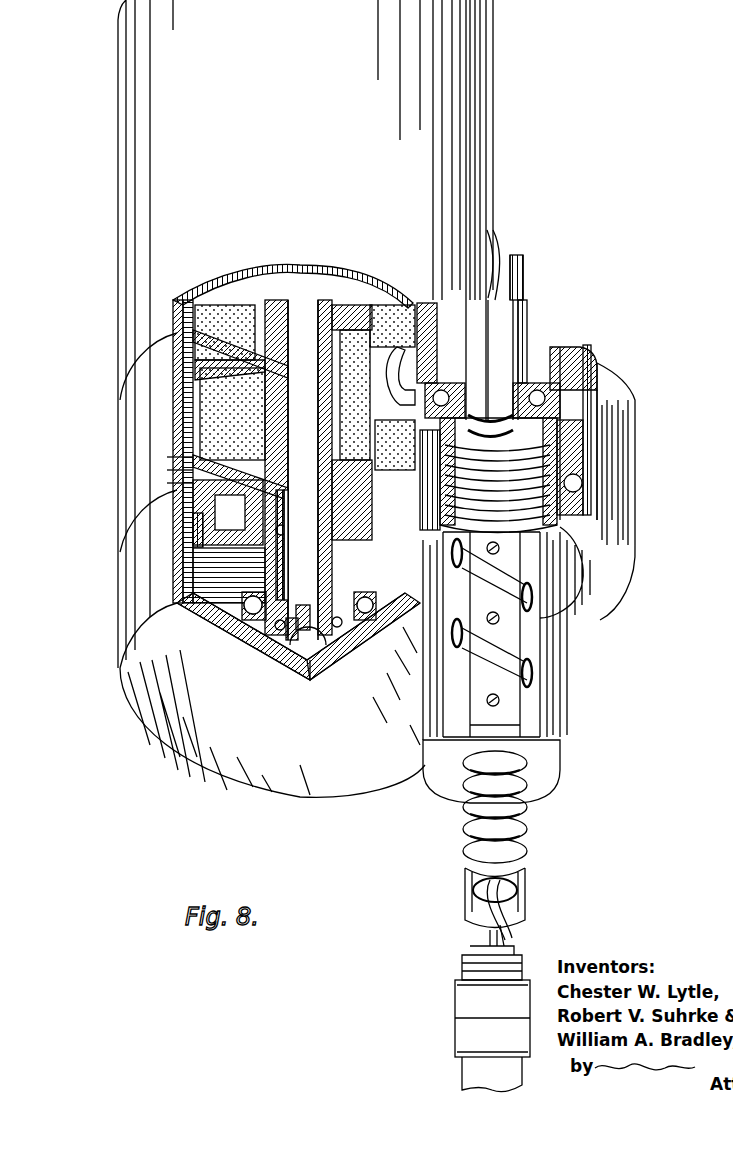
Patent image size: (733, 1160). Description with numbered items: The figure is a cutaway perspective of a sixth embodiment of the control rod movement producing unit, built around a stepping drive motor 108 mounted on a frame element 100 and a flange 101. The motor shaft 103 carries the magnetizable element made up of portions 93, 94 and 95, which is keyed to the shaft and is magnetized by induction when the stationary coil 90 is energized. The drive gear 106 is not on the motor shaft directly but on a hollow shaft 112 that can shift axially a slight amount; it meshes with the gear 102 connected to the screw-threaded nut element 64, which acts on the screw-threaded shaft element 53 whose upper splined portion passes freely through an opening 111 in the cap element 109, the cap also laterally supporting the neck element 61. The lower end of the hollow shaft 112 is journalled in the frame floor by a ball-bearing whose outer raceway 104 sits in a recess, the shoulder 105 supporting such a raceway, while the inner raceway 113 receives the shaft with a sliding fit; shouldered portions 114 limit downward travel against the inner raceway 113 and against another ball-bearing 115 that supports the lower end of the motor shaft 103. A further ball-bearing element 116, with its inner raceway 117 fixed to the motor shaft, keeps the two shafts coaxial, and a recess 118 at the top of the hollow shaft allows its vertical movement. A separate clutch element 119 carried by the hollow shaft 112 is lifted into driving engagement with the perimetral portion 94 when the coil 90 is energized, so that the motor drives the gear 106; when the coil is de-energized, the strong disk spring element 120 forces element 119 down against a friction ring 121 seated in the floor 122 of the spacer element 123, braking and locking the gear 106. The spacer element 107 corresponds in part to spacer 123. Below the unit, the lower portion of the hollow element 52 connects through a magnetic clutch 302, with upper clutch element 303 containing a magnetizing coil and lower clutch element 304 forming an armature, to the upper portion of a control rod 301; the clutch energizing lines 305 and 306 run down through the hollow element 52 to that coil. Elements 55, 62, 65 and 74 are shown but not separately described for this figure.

The hollow element 52 is at (530, 838).
The screw-threaded shaft element 53 is at (508, 327).
The conductor tube 55 is at (500, 312).
The neck element 61 is at (607, 447).
The ball bearing 62 is at (593, 493).
The screw-threaded nut element 64 is at (573, 518).
The screw 65 is at (500, 662).
The cap 74 is at (597, 375).
The stationary coil 90 is at (140, 375).
The magnetizable element 93 is at (305, 420).
The perimetral portion 94 is at (173, 427).
The magnetizable element portion 95 is at (170, 438).
The frame element 100 is at (284, 765).
The flange 101 is at (153, 545).
The gear 102 is at (593, 407).
The motor shaft 103 is at (173, 363).
The outer raceway of ball-bearing 104 is at (180, 595).
The shoulder 105 is at (248, 625).
The drive gear 106 is at (180, 570).
The spacer element 107 is at (157, 443).
The drive motor 108 is at (184, 210).
The cap element 109 is at (555, 350).
The opening 111 is at (527, 373).
The hollow shaft 112 is at (282, 566).
The inner raceway 113 is at (262, 625).
The shouldered portions 114 is at (298, 620).
The ball-bearing 115 is at (292, 640).
The ball-bearing element 116 is at (284, 504).
The inner raceway 117 is at (298, 545).
The recess 118 is at (286, 530).
The clutch element 119 is at (167, 457).
The disk spring element 120 is at (275, 470).
The friction ring 121 is at (167, 470).
The floor 122 is at (167, 483).
The spacer element 123 is at (118, 393).
The control rod 301 is at (522, 1073).
The magnetic clutch 302 is at (447, 1024).
The upper clutch element 303 is at (460, 998).
The lower clutch element 304 is at (460, 1043).
The clutch energizing line 305 is at (486, 940).
The clutch energizing line 306 is at (493, 946).